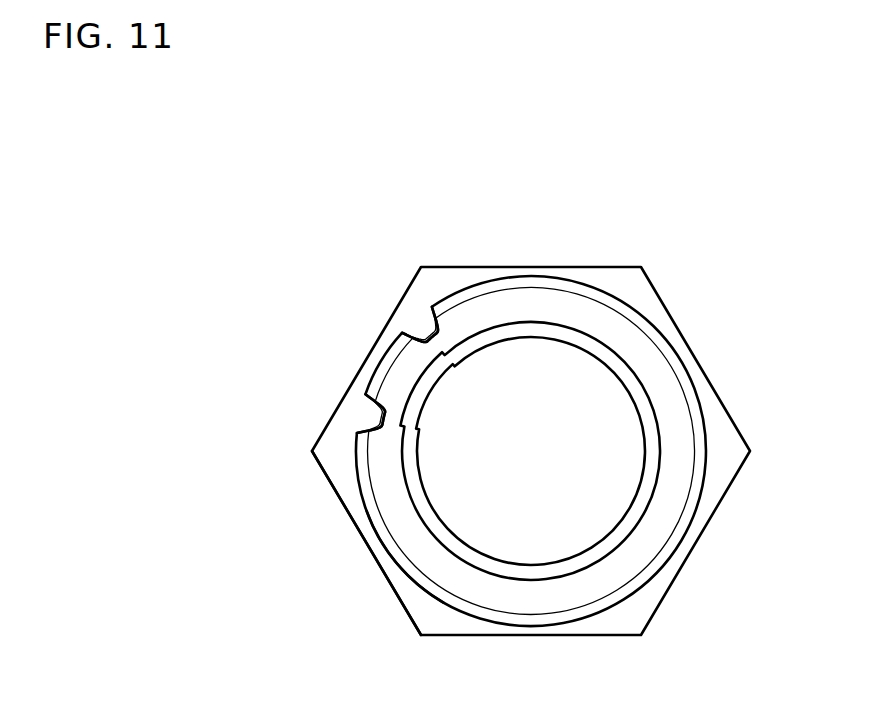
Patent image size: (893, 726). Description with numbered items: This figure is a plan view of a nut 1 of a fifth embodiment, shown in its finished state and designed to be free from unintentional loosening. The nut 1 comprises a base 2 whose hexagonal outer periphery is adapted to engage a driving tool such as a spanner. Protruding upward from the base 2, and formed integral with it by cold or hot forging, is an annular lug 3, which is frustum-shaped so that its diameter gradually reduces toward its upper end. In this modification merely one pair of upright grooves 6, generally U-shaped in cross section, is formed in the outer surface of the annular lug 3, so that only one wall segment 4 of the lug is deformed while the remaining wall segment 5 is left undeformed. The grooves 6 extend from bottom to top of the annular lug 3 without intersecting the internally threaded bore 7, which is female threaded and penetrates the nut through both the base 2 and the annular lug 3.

The nut 1 is at (618, 244).
The base 2 is at (390, 624).
The annular lug 3 is at (727, 465).
The wall segment 4 is at (362, 367).
The wall segment 5 is at (378, 538).
The upright groove 6 is at (422, 325).
The internally threaded bore 7 is at (624, 521).